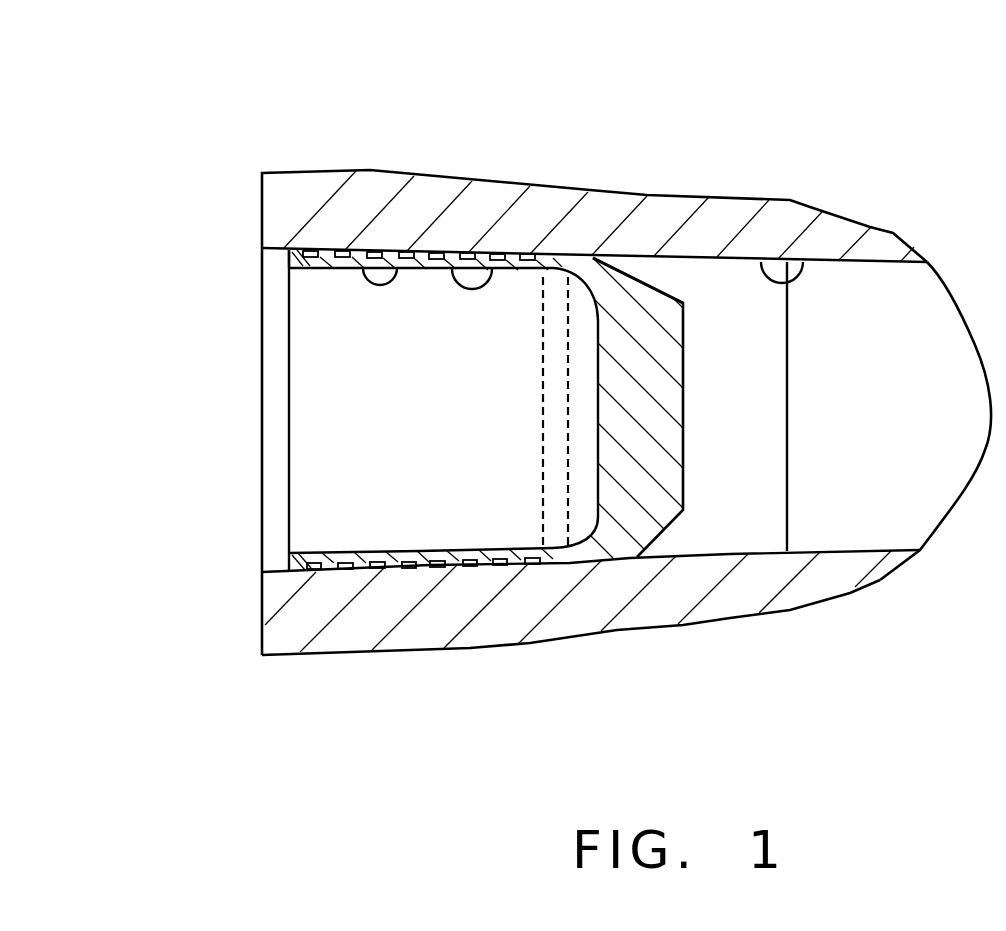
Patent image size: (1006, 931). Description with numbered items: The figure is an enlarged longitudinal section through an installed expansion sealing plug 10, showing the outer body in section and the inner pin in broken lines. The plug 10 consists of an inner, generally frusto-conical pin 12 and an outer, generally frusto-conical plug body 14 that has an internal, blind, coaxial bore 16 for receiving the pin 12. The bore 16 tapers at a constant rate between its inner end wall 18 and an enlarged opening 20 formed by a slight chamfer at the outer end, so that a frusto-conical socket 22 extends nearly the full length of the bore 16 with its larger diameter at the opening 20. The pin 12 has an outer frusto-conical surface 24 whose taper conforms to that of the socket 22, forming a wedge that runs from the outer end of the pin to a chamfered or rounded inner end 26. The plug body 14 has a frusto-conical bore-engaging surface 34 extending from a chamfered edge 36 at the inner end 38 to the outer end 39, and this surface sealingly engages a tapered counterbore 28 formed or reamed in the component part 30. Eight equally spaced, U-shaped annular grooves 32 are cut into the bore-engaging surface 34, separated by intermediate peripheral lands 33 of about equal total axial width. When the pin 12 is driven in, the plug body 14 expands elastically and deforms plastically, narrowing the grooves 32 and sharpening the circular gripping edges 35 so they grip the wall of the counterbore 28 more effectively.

The sealing plug 10 is at (627, 92).
The inner pin 12 is at (333, 482).
The plug body 14 is at (360, 570).
The bore 16 is at (503, 257).
The inner end wall 18 is at (597, 350).
The enlarged opening 20 is at (289, 266).
The frusto-conical socket 22 is at (405, 255).
The outer pin surface 24 is at (468, 550).
The inner end of pin 26 is at (555, 522).
The tapered counterbore 28 is at (808, 264).
The component part 30 is at (675, 602).
The annular grooves 32 is at (347, 569).
The peripheral lands 33 is at (330, 570).
The bore-engaging surface 34 is at (417, 568).
The gripping edges 35 is at (443, 567).
The edge 36 is at (638, 262).
The inner end of plug body 38 is at (687, 347).
The outer end of plug body 39 is at (268, 575).